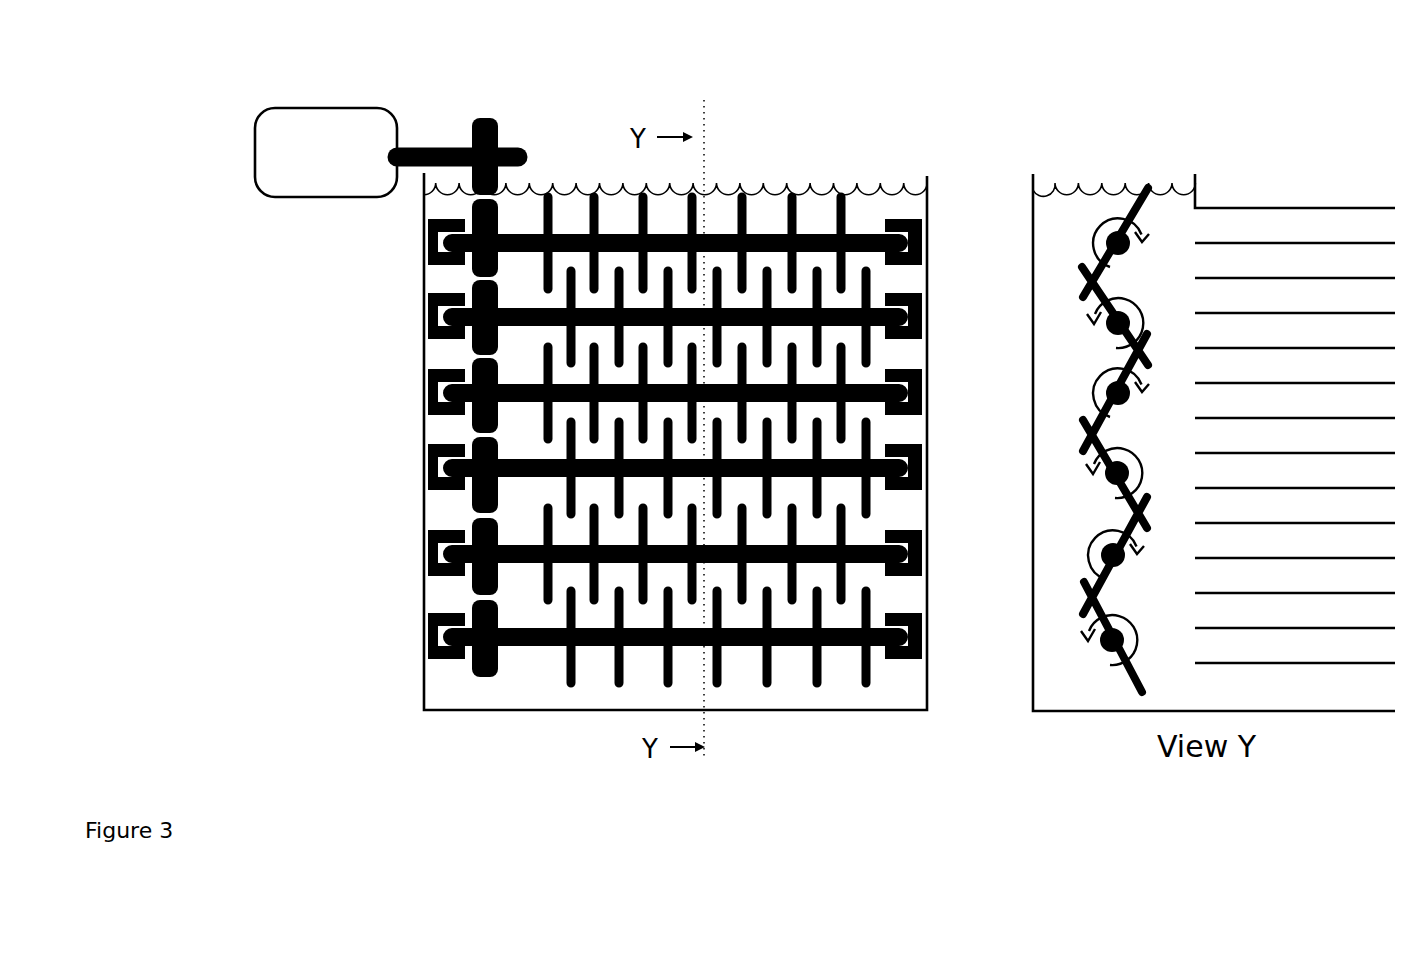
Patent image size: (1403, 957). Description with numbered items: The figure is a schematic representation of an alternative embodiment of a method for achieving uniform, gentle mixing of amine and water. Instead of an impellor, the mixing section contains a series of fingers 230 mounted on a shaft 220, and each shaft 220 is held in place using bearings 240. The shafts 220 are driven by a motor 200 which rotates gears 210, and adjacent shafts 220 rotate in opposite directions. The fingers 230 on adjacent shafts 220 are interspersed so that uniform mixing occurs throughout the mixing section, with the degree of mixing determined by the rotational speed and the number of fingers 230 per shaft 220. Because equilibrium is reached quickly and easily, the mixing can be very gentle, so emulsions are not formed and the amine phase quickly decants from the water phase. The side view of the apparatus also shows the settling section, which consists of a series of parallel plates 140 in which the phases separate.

The parallel plates 140 is at (1355, 243).
The motor 200 is at (347, 197).
The gears 210 is at (502, 213).
The shaft 220 is at (1120, 237).
The fingers 230 is at (1145, 188).
The bearings 240 is at (425, 392).